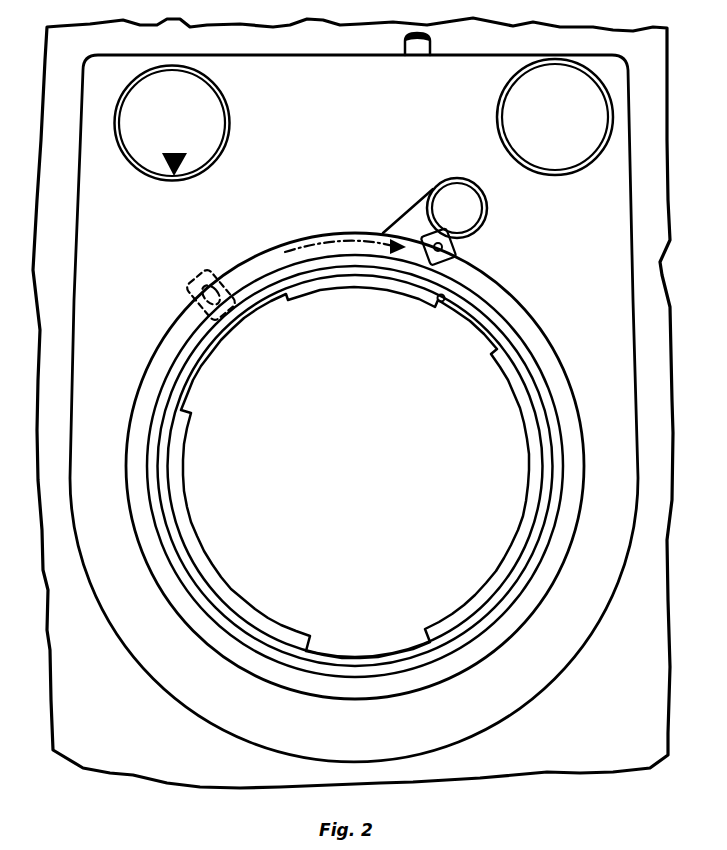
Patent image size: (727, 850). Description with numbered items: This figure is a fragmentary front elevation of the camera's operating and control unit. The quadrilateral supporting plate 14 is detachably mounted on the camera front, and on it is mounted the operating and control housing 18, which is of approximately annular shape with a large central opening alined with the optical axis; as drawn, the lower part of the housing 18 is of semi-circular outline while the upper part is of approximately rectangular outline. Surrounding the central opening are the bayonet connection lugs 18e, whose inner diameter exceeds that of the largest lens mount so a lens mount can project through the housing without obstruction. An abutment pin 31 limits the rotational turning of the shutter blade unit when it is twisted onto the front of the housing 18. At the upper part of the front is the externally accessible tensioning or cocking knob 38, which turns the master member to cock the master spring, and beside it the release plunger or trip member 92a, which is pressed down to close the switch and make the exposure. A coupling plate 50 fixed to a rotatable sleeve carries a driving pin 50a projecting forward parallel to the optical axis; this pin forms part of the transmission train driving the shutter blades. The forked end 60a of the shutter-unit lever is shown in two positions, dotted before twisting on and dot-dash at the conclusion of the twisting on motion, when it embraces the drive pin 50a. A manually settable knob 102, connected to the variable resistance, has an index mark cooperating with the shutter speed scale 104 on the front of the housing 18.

The supporting plate 14 is at (83, 755).
The operating and control housing 18 is at (140, 665).
The bayonet connection lugs 18e is at (187, 447).
The abutment pin 31 is at (441, 303).
The tensioning or cocking knob 38 is at (510, 117).
The coupling plate 50 is at (463, 248).
The driving pin 50a is at (457, 253).
The forked end of lever 60a is at (197, 280).
The release plunger or trip member 92a is at (417, 52).
The manually settable knob 102 is at (207, 103).
The shutter speed scale 104 is at (230, 173).